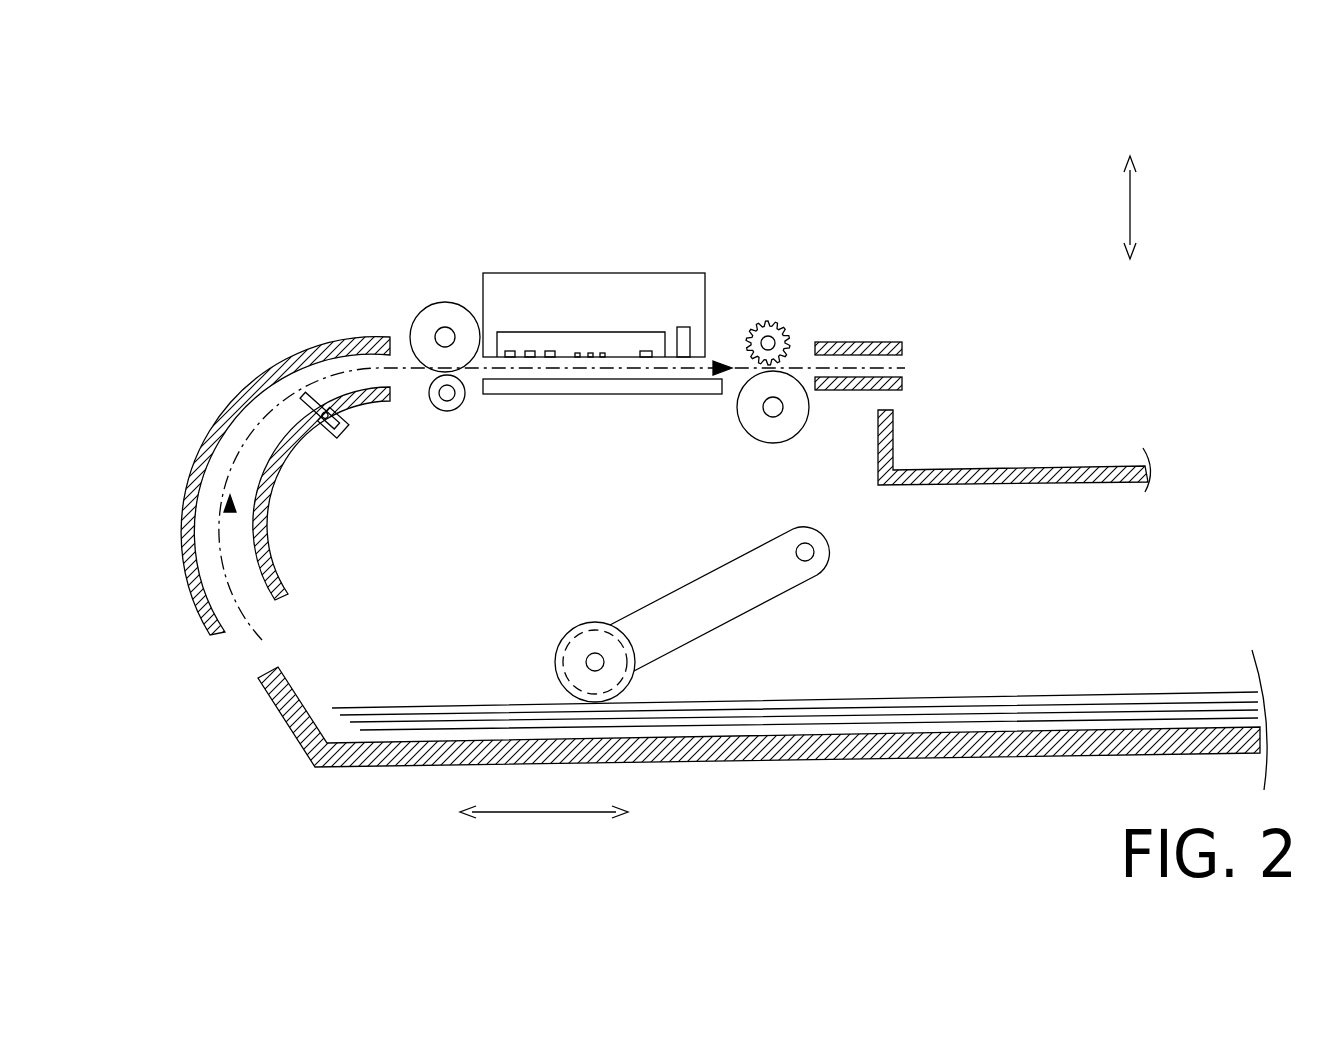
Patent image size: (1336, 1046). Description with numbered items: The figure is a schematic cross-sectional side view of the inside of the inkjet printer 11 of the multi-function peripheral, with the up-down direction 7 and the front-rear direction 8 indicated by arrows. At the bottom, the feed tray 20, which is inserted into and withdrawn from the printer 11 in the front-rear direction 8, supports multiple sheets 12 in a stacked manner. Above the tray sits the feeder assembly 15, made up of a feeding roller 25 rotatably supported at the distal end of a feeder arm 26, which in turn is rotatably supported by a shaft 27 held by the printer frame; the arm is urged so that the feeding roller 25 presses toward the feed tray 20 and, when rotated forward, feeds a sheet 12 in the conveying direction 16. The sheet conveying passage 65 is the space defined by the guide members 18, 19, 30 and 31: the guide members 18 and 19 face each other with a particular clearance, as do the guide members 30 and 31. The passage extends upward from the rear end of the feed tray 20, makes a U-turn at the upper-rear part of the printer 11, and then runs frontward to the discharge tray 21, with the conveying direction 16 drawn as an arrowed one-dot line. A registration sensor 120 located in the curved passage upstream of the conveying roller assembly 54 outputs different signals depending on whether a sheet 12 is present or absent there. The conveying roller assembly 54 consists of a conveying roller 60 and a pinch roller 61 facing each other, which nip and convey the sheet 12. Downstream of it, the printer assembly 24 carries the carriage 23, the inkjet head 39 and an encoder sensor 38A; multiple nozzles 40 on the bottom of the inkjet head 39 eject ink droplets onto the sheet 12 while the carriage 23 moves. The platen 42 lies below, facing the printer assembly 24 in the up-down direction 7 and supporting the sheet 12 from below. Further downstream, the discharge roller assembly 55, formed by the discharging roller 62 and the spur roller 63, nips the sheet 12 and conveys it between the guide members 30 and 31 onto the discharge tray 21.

The up-down direction 7 is at (1133, 203).
The front-rear direction 8 is at (538, 813).
The printer 11 is at (233, 193).
The sheets 12 is at (1022, 692).
The feeder assembly 15 is at (718, 614).
The conveying direction 16 is at (238, 576).
The guide member 18 is at (183, 522).
The guide member 19 is at (278, 572).
The feed tray 20 is at (772, 767).
The discharge tray 21 is at (1000, 470).
The carriage 23 is at (528, 272).
The printer assembly 24 is at (594, 319).
The feeding roller 25 is at (572, 630).
The feeder arm 26 is at (660, 602).
The shaft 27 is at (816, 566).
The guide member 30 is at (890, 342).
The guide member 31 is at (825, 390).
The encoder sensor 38A is at (688, 327).
The inkjet head 39 is at (570, 332).
The nozzles 40 is at (510, 357).
The platen 42 is at (678, 395).
The conveying roller assembly 54 is at (472, 378).
The discharge roller assembly 55 is at (800, 330).
The conveying roller 60 is at (443, 302).
The pinch roller 61 is at (449, 411).
The discharging roller 62 is at (775, 443).
The spur roller 63 is at (768, 321).
The sheet conveying passage 65 is at (232, 455).
The registration sensor 120 is at (355, 458).